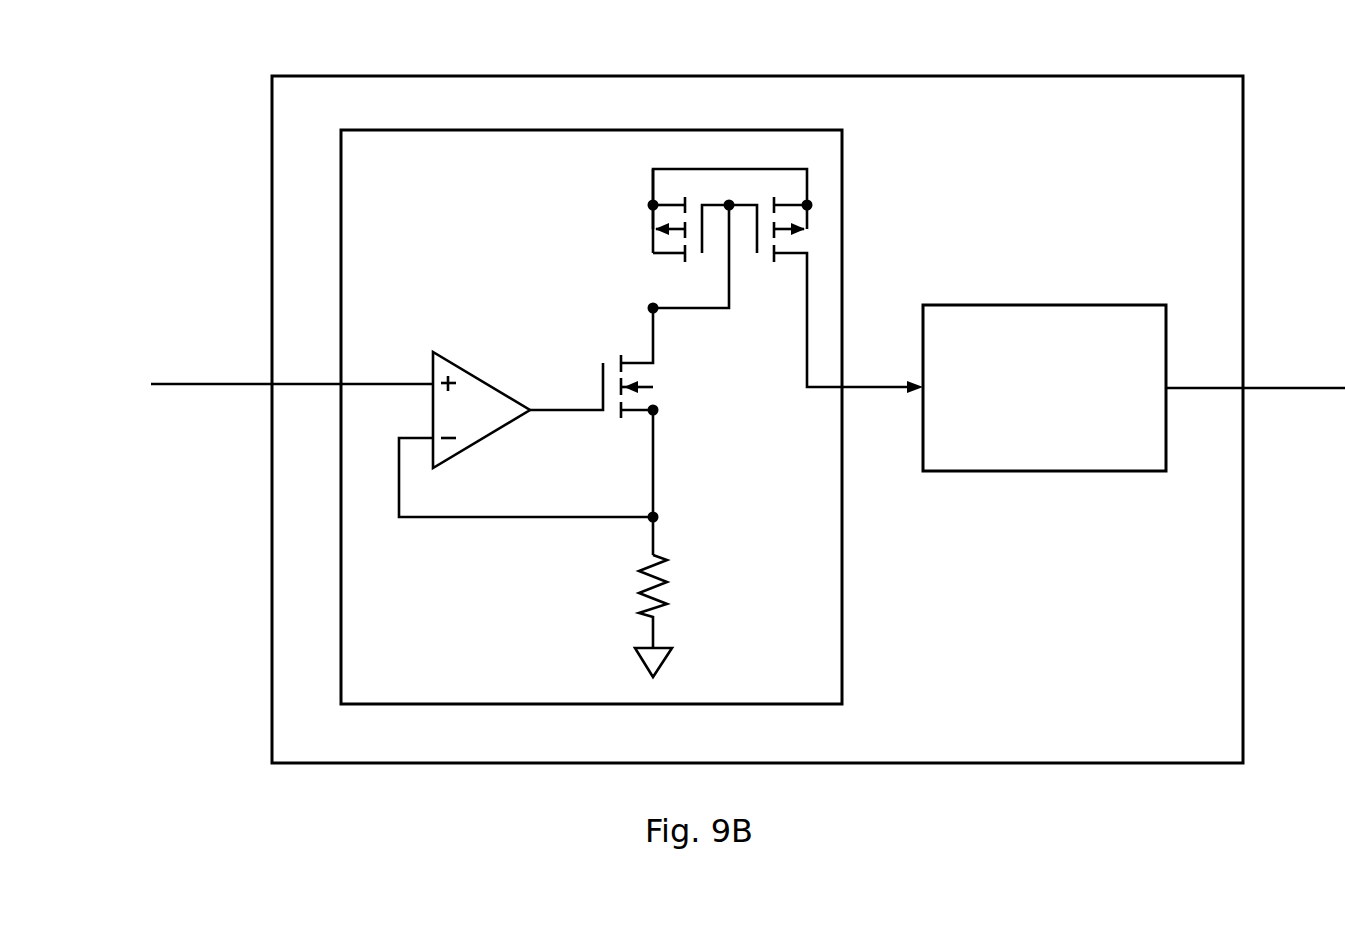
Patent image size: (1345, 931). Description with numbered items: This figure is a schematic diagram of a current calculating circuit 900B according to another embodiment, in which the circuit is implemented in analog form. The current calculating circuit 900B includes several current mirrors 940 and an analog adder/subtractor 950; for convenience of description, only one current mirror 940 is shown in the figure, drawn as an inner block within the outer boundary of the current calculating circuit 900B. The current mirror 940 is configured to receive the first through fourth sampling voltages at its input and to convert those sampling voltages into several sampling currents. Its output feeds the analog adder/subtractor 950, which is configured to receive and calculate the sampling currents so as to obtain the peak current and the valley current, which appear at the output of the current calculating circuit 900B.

The current calculating circuit 900B is at (248, 126).
The current mirror 940 is at (842, 619).
The analog adder/subtractor 950 is at (1044, 388).